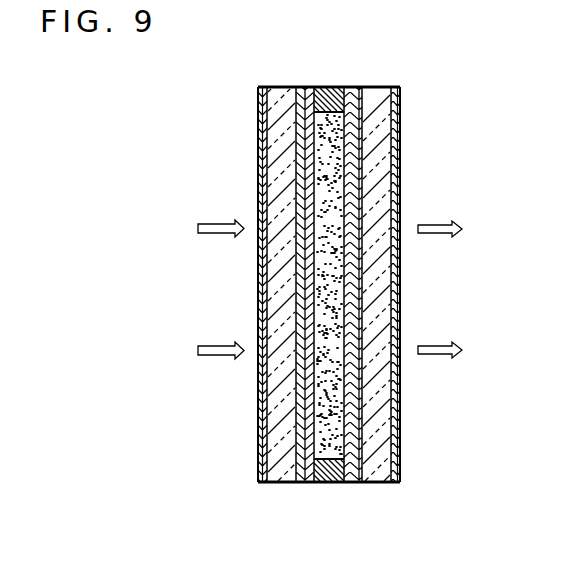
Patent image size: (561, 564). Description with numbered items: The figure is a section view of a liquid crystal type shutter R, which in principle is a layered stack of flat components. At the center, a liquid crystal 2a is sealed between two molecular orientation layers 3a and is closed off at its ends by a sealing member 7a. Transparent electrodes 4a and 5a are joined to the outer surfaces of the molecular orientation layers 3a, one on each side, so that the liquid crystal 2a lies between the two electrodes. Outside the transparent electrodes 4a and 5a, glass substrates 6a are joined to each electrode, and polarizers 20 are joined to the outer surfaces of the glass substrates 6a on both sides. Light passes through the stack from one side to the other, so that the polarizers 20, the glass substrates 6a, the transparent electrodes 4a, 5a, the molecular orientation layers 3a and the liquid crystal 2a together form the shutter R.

The liquid crystal 2a is at (328, 283).
The molecular orientation layers 3a is at (311, 87).
The transparent electrode 4a is at (300, 148).
The transparent electrode 5a is at (356, 148).
The glass substrates 6a is at (280, 400).
The sealing member 7a is at (328, 87).
The polarizers 20 is at (258, 457).
The liquid crystal type shutter R is at (253, 104).